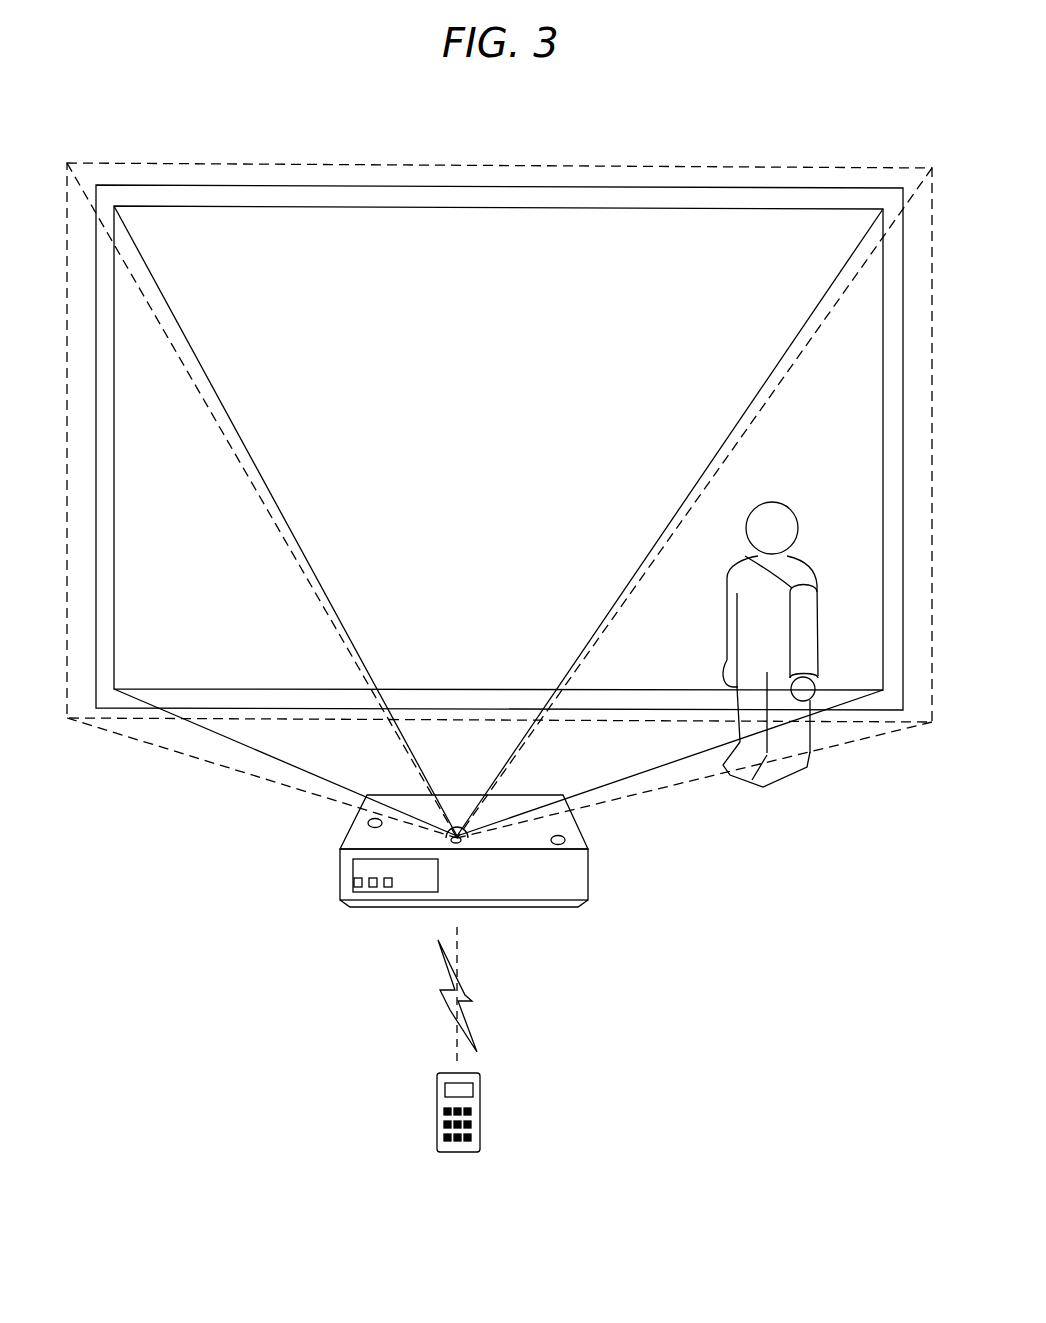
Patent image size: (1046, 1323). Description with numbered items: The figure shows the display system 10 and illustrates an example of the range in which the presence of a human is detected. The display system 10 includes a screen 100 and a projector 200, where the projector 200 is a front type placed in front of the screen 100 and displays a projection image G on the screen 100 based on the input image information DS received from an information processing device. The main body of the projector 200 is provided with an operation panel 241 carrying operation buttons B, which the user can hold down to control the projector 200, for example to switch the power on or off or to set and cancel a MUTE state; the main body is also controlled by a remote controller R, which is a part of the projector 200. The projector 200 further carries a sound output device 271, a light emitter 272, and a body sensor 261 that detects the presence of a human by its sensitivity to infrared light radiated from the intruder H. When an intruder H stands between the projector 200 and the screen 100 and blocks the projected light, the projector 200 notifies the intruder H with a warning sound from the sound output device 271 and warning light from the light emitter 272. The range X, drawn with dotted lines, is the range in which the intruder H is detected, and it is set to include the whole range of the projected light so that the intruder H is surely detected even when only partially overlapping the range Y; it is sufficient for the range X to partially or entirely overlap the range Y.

The display system 10 is at (178, 163).
The screen 100 is at (598, 187).
The projection image G is at (408, 199).
The projector 200 is at (623, 860).
The body sensor 261 is at (463, 843).
The sound output device 271 is at (368, 823).
The light emitter 272 is at (562, 839).
The operation panel 241 is at (353, 882).
The operation buttons B is at (388, 888).
The input image information DS is at (330, 865).
The intruder H is at (813, 728).
The range Y is at (697, 757).
The range X is at (820, 753).
The remote controller R is at (481, 1125).